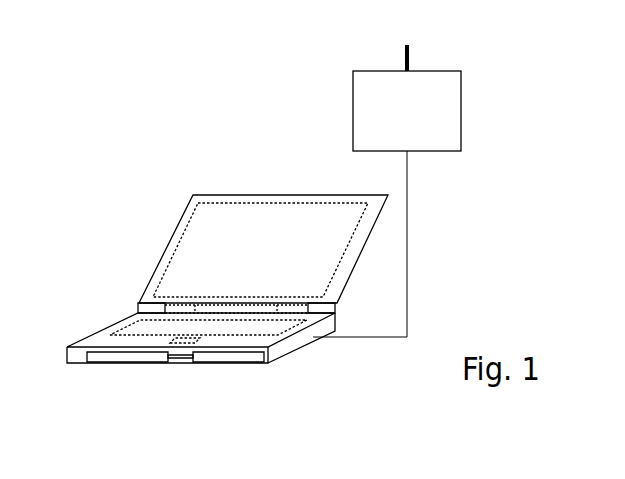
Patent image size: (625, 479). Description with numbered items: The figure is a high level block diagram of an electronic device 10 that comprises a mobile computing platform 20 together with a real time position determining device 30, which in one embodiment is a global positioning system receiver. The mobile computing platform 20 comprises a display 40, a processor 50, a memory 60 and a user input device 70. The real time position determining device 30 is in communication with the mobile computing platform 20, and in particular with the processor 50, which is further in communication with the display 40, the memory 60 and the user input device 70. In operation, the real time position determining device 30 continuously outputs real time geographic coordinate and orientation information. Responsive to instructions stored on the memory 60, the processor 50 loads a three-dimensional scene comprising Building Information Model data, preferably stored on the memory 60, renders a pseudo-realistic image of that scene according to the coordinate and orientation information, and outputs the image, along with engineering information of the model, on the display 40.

The electronic device 10 is at (234, 82).
The mobile computing platform 20 is at (292, 194).
The real time position determining device 30 is at (461, 110).
The display 40 is at (194, 237).
The processor 50 is at (232, 357).
The memory 60 is at (113, 357).
The user input device 70 is at (141, 323).